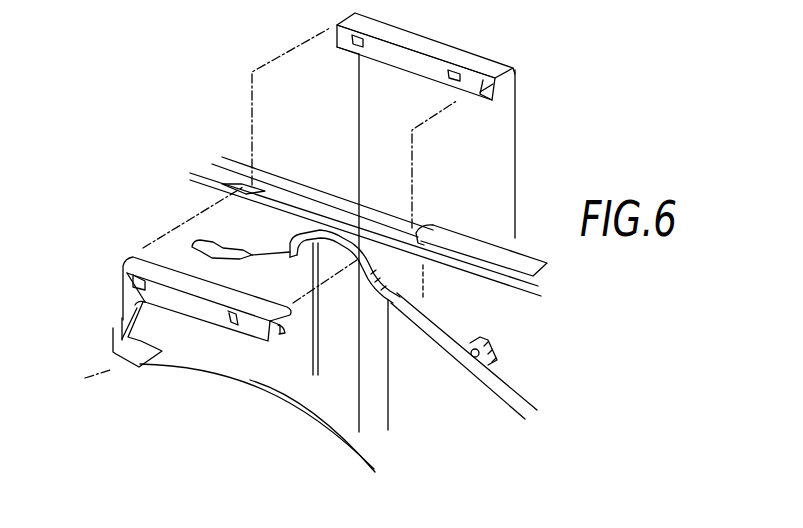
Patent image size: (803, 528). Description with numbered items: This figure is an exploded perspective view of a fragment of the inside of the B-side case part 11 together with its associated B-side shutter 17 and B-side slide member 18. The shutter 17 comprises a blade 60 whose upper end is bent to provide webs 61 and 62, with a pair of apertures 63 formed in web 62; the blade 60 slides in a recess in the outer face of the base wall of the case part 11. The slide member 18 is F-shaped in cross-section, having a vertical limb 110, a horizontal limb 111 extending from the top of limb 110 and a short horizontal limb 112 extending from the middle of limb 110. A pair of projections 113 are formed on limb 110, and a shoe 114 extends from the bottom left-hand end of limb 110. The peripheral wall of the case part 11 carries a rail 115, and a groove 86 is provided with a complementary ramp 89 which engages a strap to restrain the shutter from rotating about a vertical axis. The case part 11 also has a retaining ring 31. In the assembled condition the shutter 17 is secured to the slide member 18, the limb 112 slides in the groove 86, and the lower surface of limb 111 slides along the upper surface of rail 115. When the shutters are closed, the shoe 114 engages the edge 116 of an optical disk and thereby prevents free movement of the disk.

The web 61 is at (358, 25).
The B-side shutter 17 is at (480, 82).
The web 62 is at (342, 46).
The apertures 63 is at (450, 76).
The blade 60 is at (490, 132).
The rail 115 is at (340, 203).
The ramp 89 is at (240, 189).
The groove 86 is at (446, 259).
The B-side slide member 18 is at (130, 258).
The vertical limb 110 is at (187, 303).
The projections 113 is at (131, 283).
The shoe 114 is at (118, 347).
The horizontal limb 111 is at (287, 314).
The short horizontal limb 112 is at (280, 330).
The retaining ring 31 is at (505, 398).
The edge of an optical disk 116 is at (293, 403).
The B-side case part 11 is at (556, 318).